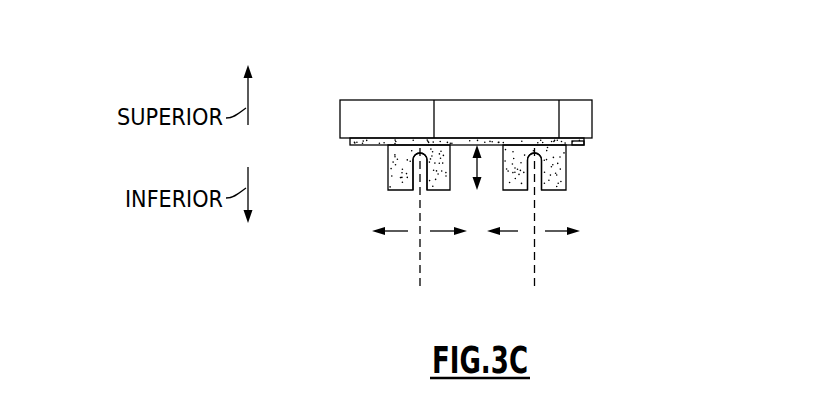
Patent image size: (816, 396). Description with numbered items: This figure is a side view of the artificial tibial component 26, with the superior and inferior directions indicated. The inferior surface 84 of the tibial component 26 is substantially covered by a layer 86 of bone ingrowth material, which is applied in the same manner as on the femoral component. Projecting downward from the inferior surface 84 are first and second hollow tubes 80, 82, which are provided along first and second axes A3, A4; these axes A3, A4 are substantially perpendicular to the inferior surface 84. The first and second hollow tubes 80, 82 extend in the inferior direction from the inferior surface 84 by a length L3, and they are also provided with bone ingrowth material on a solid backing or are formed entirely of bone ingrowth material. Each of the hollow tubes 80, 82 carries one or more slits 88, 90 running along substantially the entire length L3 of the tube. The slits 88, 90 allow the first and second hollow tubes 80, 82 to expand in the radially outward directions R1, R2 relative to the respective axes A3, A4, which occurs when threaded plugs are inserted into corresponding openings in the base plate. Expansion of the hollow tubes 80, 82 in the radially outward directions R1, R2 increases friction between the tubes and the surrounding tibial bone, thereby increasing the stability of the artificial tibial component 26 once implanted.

The artificial tibial component 26 is at (584, 74).
The first hollow tube 80 is at (384, 167).
The second hollow tube 82 is at (569, 168).
The inferior surface 84 is at (349, 143).
The layer of bone ingrowth material 86 is at (586, 142).
The slit 88 is at (428, 192).
The slit 90 is at (543, 192).
The length L3 is at (478, 166).
The first axis A3 is at (419, 270).
The second axis A4 is at (535, 270).
The radially outward direction R1 is at (397, 234).
The radially outward direction R2 is at (512, 234).